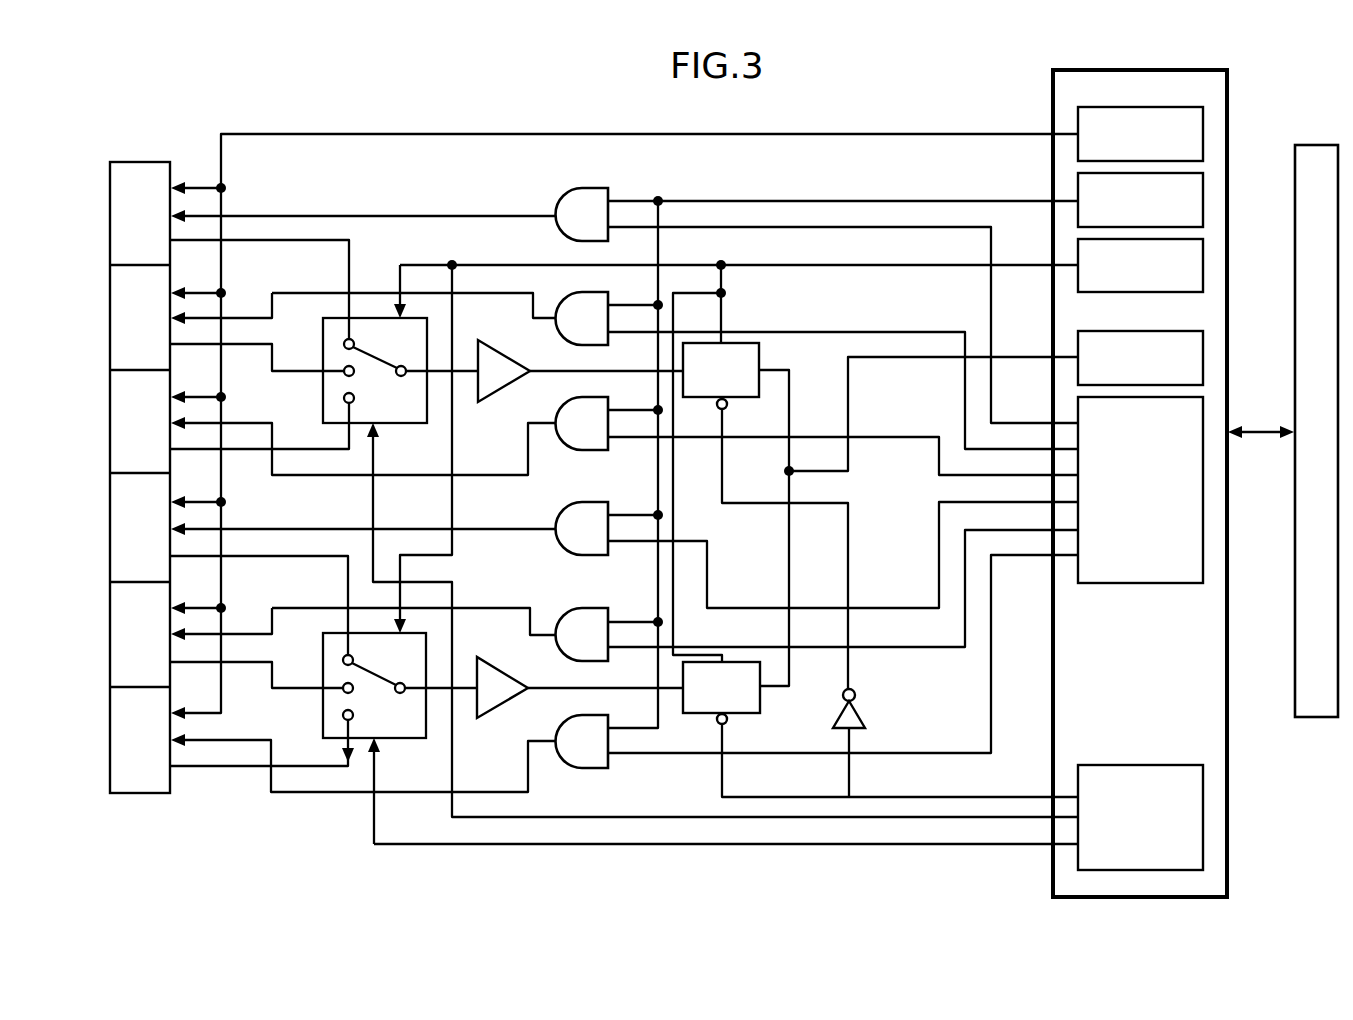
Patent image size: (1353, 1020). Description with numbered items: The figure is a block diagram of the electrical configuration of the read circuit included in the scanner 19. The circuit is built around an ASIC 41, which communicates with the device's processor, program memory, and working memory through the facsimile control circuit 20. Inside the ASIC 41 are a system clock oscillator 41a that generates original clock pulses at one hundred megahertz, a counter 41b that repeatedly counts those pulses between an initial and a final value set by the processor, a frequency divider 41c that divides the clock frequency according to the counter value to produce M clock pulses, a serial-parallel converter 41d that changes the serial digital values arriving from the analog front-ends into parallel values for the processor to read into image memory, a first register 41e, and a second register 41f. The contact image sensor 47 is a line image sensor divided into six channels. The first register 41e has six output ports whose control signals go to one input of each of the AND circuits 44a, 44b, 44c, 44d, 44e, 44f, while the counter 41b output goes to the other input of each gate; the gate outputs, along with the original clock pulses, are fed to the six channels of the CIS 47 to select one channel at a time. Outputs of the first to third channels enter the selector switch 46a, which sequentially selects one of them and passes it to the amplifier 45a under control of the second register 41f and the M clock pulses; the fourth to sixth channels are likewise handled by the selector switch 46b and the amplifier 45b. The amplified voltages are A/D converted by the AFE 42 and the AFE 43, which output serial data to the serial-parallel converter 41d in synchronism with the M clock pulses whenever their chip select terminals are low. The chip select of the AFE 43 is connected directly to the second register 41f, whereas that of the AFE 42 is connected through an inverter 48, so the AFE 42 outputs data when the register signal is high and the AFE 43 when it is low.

The scanner 19 is at (1214, 54).
The facsimile control circuit 20 is at (1317, 144).
The ASIC 41 is at (1170, 483).
The system clock oscillator 41a is at (1204, 133).
The counter 41b is at (1204, 199).
The frequency divider 41c is at (1204, 266).
The serial-parallel converter 41d is at (1204, 357).
The first register 41e is at (1204, 489).
The second register 41f is at (1204, 797).
The AFE 42 is at (760, 353).
The AFE 43 is at (761, 703).
The AND circuit 44a is at (626, 184).
The AND circuit 44b is at (626, 291).
The AND circuit 44c is at (626, 394).
The AND circuit 44d is at (626, 499).
The AND circuit 44e is at (626, 605).
The AND circuit 44f is at (626, 712).
The amplifier 45a is at (503, 331).
The amplifier 45b is at (503, 651).
The selector switch 46a is at (400, 425).
The selector switch 46b is at (400, 741).
The contact image sensor 47 is at (139, 162).
The inverter 48 is at (860, 713).